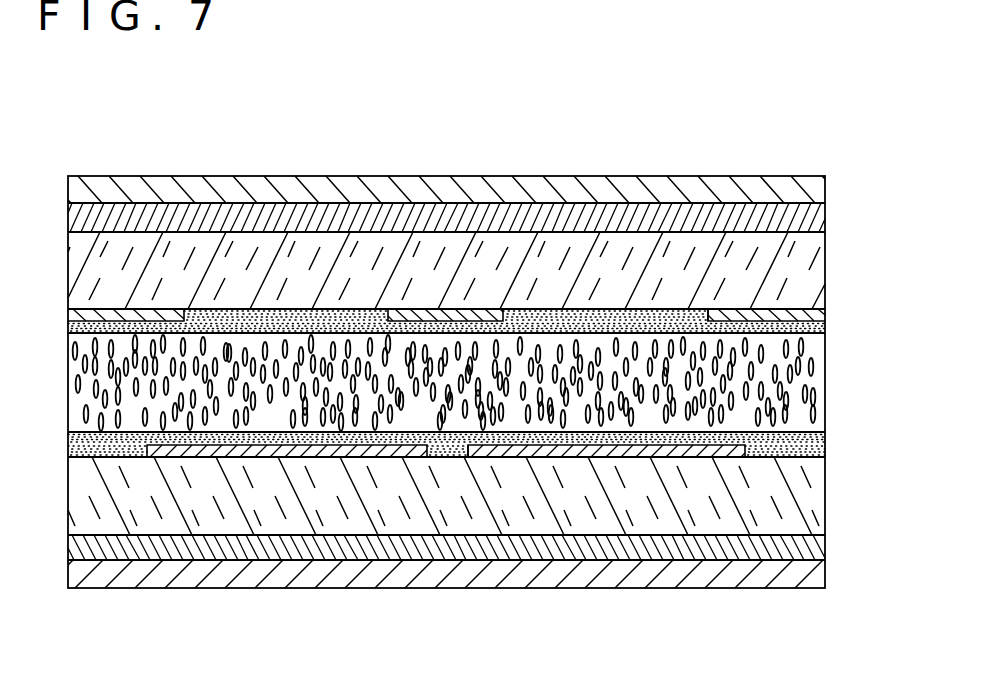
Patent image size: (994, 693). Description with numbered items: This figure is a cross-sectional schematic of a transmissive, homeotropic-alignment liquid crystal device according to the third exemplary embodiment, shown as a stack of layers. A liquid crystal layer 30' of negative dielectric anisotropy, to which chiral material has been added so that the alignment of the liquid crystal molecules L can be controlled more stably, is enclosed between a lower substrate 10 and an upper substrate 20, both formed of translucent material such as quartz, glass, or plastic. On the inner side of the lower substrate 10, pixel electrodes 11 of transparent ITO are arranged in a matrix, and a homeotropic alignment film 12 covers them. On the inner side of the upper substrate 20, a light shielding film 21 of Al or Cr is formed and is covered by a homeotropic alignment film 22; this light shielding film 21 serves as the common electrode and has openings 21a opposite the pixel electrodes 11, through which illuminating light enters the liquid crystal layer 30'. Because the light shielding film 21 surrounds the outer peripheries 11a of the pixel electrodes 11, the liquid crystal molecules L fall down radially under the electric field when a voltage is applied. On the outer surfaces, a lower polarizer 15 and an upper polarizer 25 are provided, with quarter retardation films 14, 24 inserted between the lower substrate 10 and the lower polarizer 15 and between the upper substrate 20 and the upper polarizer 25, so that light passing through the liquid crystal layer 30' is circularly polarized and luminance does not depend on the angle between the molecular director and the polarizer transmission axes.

The upper polarizer 25 is at (825, 185).
The quarter retardation film 24 is at (825, 215).
The upper substrate 20 is at (810, 273).
The light shielding film 21 is at (825, 318).
The opening 21a is at (706, 313).
The homeotropic alignment film 22 is at (810, 330).
The liquid crystal layer 30' is at (499, 383).
The homeotropic alignment film 12 is at (812, 441).
The pixel electrode 11 is at (800, 451).
The outer periphery of pixel electrode 11a is at (464, 458).
The lower substrate 10 is at (803, 498).
The quarter retardation film 14 is at (825, 553).
The lower polarizer 15 is at (808, 585).
The liquid crystal molecule L is at (227, 347).